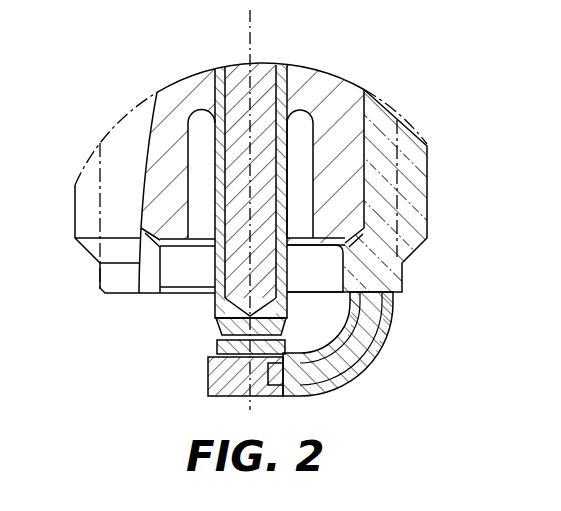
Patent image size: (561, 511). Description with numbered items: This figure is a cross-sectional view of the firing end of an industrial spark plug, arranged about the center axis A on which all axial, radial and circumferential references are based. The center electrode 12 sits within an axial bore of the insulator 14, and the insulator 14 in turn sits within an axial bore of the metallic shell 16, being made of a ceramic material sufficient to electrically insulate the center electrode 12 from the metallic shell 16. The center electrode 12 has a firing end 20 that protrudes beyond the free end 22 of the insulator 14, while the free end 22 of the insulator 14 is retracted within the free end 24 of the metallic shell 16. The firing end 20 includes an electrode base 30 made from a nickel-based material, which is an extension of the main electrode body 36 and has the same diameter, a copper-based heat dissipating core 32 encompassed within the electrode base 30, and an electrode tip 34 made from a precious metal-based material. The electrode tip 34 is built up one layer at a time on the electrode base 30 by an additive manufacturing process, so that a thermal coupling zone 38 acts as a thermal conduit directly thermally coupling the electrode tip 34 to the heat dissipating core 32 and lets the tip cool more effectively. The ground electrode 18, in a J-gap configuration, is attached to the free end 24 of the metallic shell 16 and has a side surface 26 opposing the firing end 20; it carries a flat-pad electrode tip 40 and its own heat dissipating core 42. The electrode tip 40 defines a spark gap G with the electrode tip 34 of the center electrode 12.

The center axis A is at (250, 33).
The center electrode 12 is at (280, 86).
The insulator 14 is at (338, 113).
The metallic shell 16 is at (412, 160).
The ground electrode 18 is at (377, 355).
The firing end 20 is at (193, 353).
The free end 22 is at (160, 290).
The free end 24 is at (103, 293).
The side surface 26 is at (357, 373).
The electrode base 30 is at (283, 291).
The heat dissipating core 32 is at (245, 222).
The electrode tip 34 is at (218, 330).
The main electrode body 36 is at (221, 78).
The thermal coupling zone 38 is at (284, 311).
The electrode tip 40 is at (210, 350).
The heat dissipating core 42 is at (372, 314).
The spark gap G is at (185, 345).